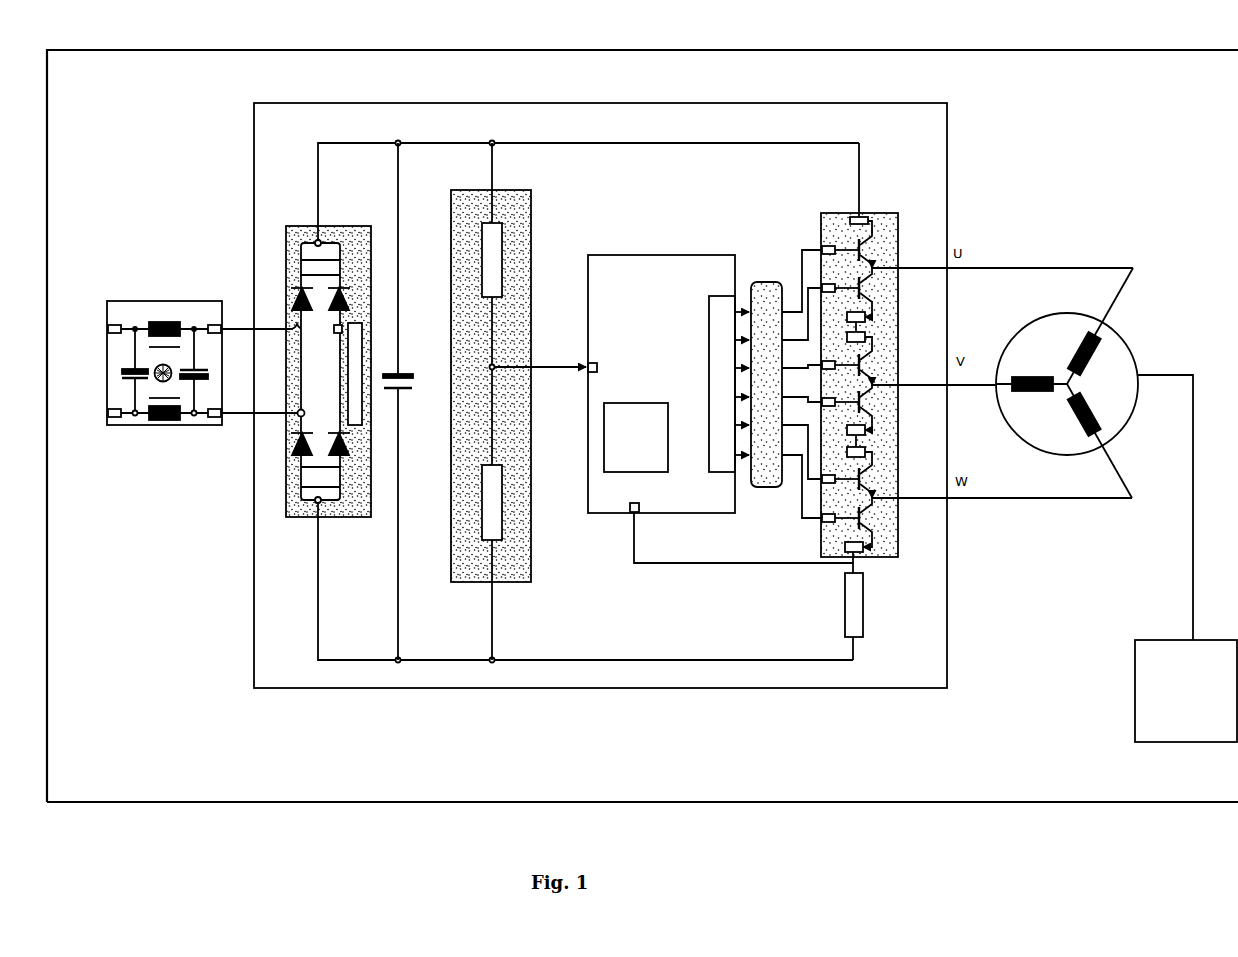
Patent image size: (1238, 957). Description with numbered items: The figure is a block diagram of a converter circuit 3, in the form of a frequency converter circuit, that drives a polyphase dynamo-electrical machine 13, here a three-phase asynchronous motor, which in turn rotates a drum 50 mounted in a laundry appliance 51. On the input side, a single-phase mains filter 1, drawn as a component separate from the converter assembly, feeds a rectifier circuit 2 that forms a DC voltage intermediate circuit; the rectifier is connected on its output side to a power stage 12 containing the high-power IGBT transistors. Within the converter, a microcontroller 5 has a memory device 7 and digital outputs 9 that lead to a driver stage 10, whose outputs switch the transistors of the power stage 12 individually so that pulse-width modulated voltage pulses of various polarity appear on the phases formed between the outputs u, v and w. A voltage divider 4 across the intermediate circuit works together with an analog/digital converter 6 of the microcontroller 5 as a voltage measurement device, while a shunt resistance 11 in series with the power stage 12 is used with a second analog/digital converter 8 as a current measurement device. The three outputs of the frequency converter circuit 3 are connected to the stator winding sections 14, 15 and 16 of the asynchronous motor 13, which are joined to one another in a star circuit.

The mains filter 1 is at (125, 394).
The rectifier circuit 2 is at (317, 420).
The frequency converter circuit 3 is at (279, 647).
The voltage divider 4 is at (469, 560).
The microcontroller 5 is at (607, 498).
The analog/digital signal converter 6 is at (550, 375).
The memory device 7 is at (636, 437).
The analog/digital signal converter 8 is at (741, 530).
The digital outputs 9 is at (722, 384).
The driver stage 10 is at (778, 384).
The shunt resistance 11 is at (853, 618).
The power stage 12 is at (890, 547).
The dynamo-electrical machine 13 is at (1091, 454).
The winding section 14 is at (1095, 326).
The winding section 15 is at (1032, 373).
The winding section 16 is at (1099, 441).
The drum 50 is at (1198, 742).
The laundry appliance 51 is at (860, 802).